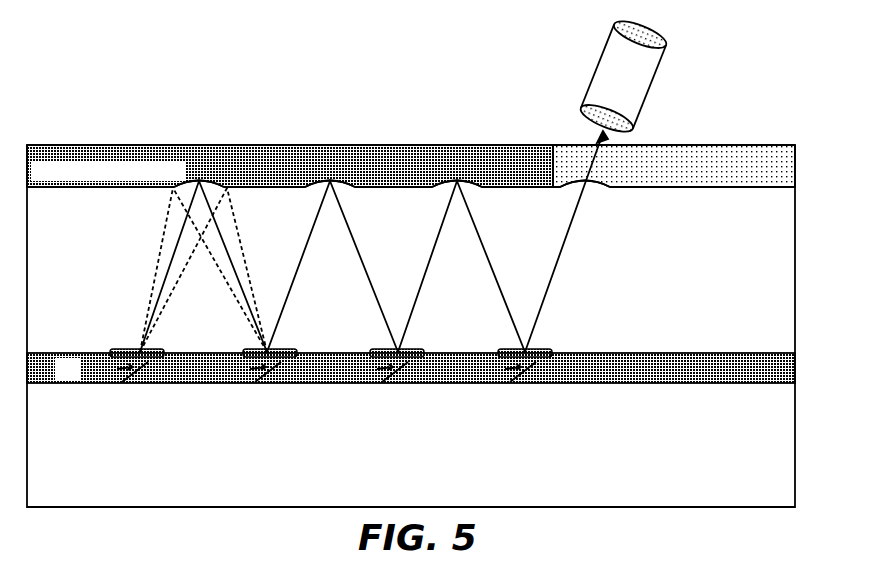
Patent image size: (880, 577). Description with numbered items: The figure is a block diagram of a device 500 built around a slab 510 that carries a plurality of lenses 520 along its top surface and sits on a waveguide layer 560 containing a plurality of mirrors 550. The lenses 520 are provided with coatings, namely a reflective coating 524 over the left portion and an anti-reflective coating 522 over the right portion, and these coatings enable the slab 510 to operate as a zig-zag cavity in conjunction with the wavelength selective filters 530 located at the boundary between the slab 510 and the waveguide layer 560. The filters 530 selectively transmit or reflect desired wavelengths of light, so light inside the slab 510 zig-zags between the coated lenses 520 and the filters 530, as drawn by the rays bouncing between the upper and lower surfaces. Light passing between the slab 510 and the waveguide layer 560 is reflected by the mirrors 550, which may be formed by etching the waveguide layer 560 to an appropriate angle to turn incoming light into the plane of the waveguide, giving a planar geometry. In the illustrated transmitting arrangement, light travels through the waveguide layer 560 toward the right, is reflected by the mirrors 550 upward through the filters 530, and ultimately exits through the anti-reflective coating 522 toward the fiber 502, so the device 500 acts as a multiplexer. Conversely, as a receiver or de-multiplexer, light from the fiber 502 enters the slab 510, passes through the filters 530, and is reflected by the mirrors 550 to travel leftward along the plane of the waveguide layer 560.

The device 500 is at (220, 66).
The fiber 502 is at (645, 33).
The slab 510 is at (695, 271).
The lenses 520 is at (572, 183).
The anti-reflective coating 522 is at (707, 145).
The reflective coating 524 is at (172, 145).
The wavelength selective filters 530 is at (127, 349).
The mirrors 550 is at (123, 383).
The waveguide layer 560 is at (640, 363).